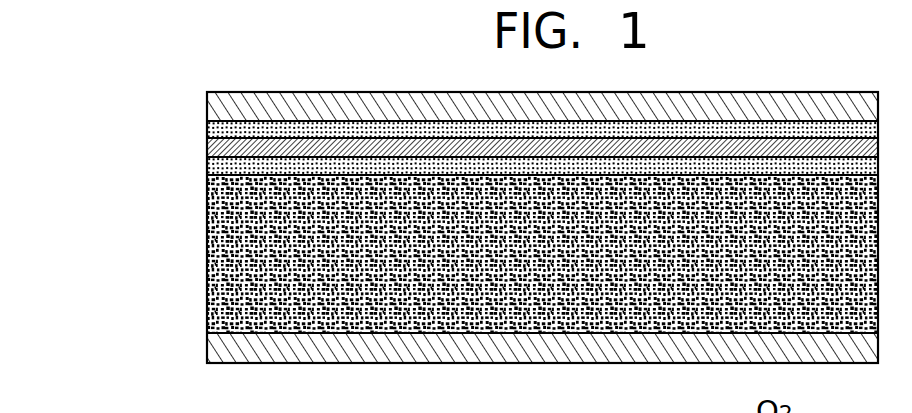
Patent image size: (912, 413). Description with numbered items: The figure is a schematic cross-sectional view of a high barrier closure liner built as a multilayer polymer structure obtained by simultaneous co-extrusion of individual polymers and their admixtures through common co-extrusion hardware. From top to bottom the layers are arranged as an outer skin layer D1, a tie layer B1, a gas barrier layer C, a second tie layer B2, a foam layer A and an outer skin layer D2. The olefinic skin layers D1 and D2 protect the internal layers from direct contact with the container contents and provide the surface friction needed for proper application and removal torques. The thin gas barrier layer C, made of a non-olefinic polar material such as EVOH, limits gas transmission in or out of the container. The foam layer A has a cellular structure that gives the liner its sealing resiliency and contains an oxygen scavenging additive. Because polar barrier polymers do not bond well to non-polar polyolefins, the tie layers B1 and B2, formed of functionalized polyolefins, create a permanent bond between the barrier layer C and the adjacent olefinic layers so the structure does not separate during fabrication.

The skin layer D1 is at (227, 113).
The tie layer B1 is at (208, 130).
The gas barrier layer C is at (207, 148).
The tie layer B2 is at (213, 167).
The foam layer A is at (233, 273).
The skin layer D2 is at (220, 345).